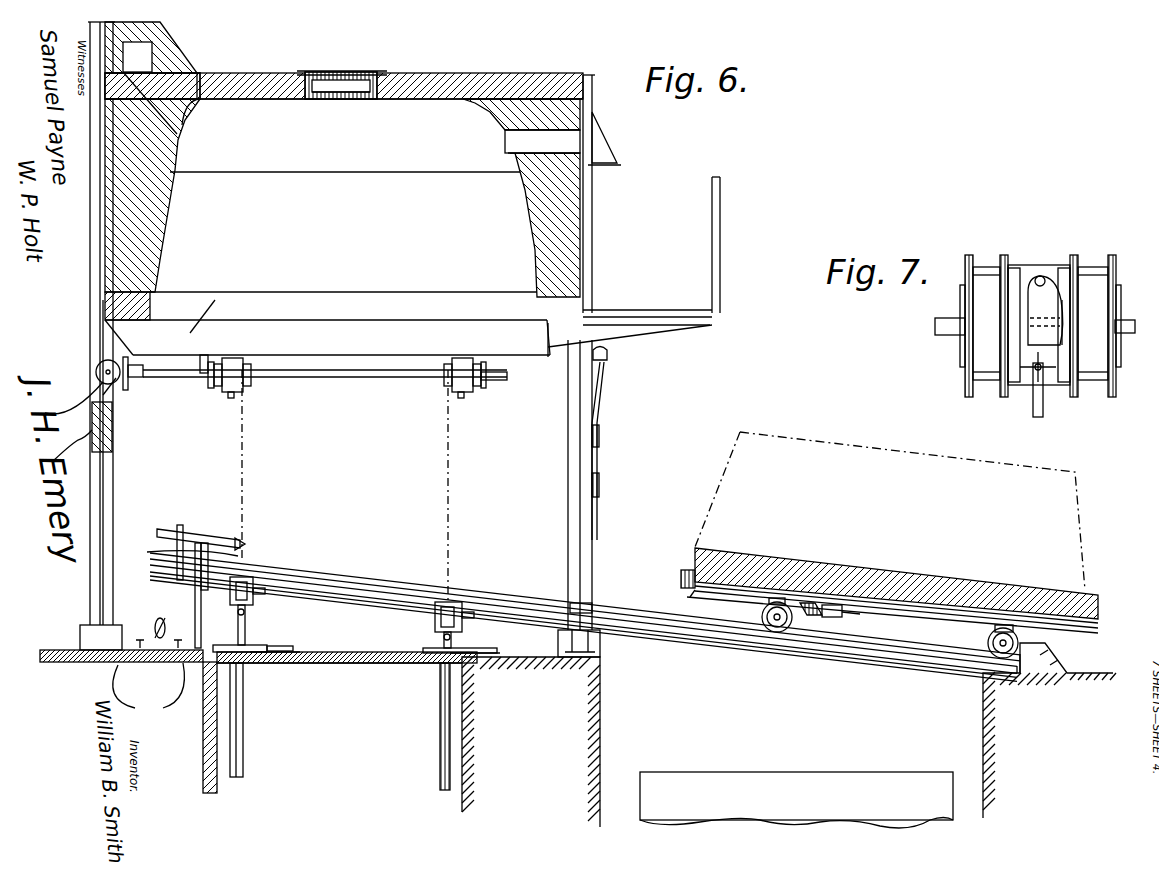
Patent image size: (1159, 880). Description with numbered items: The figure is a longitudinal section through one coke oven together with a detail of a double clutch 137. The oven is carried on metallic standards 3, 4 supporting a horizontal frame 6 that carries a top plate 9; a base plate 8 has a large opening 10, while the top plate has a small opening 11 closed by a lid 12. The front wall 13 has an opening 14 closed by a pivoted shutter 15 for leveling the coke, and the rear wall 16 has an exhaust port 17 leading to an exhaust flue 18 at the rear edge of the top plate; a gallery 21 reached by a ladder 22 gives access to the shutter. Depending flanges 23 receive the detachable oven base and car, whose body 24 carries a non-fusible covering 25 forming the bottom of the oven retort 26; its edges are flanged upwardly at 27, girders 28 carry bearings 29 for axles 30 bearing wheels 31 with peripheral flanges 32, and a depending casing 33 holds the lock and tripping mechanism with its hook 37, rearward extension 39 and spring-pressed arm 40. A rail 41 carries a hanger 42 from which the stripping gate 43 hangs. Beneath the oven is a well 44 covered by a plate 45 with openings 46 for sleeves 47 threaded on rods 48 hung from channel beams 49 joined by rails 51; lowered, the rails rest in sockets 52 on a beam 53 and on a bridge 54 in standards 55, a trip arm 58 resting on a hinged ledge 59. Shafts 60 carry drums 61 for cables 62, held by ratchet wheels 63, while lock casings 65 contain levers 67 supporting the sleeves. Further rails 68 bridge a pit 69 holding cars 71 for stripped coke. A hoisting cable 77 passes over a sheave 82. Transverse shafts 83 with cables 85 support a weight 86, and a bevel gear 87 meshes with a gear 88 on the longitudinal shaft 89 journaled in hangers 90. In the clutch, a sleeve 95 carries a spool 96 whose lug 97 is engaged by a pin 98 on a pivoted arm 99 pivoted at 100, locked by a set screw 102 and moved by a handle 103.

In FIG. 6, the standard 3 is at (585, 530).
In FIG. 6, the standard 4 is at (115, 435).
In FIG. 6, the horizontal rectangular metallic frame 6 is at (586, 77).
In FIG. 6, the base plate 8 is at (150, 297).
In FIG. 6, the top plate 9 is at (420, 73).
In FIG. 6, the large opening 10 is at (352, 293).
In FIG. 6, the small opening 11 is at (356, 94).
In FIG. 6, the lid 12 is at (352, 70).
In FIG. 6, the front wall 13 is at (513, 203).
In FIG. 6, the opening 14 is at (502, 141).
In FIG. 6, the pivoted shutter 15 is at (605, 142).
In FIG. 6, the rear wall 16 is at (160, 220).
In FIG. 6, the exhaust port 17 is at (172, 124).
In FIG. 6, the exhaust flue 18 is at (147, 67).
In FIG. 6, the gallery 21 is at (634, 267).
In FIG. 6, the steps or ladder 22 is at (1058, 665).
In FIG. 6, the depending flanges 23 is at (218, 298).
In FIG. 6, the body 24 is at (896, 611).
In FIG. 6, the covering 25 is at (930, 575).
In FIG. 6, the oven retort 26 is at (344, 161).
In FIG. 6, the upwardly flanged edges 27 is at (683, 575).
In FIG. 6, the girders 28 is at (892, 619).
In FIG. 6, the bearings 29 is at (1000, 627).
In FIG. 6, the revoluble axles 30 is at (772, 622).
In FIG. 6, the wheels 31 is at (778, 632).
In FIG. 6, the central peripheral flanges 32 is at (1065, 585).
In FIG. 6, the depending casing 33 is at (858, 623).
In FIG. 6, the hook 37 is at (790, 640).
In FIG. 6, the rearward extension 39 is at (815, 603).
In FIG. 6, the spring-pressed pivoted arm 40 is at (835, 605).
In FIG. 6, the rail 41 is at (606, 377).
In FIG. 6, the movable hanger 42 is at (609, 355).
In FIG. 6, the gate 43 is at (600, 446).
In FIG. 6, the well 44 is at (278, 727).
In FIG. 6, the plate 45 is at (350, 652).
In FIG. 6, the openings 46 is at (258, 665).
In FIG. 6, the sleeves 47 is at (243, 705).
In FIG. 6, the depending rods 48 is at (248, 630).
In FIG. 6, the transverse channel beams 49 is at (435, 620).
In FIG. 6, the longitudinal rails 51 is at (350, 576).
In FIG. 6, the sockets 52 is at (575, 603).
In FIG. 6, the transverse beam 53 is at (570, 657).
In FIG. 6, the bridge 54 is at (215, 570).
In FIG. 6, the standards 55 is at (170, 680).
In FIG. 6, the trip arm 58 is at (180, 525).
In FIG. 6, the ledge 59 is at (210, 566).
In FIG. 6, the shafts 60 is at (266, 594).
In FIG. 6, the drums 61 is at (230, 590).
In FIG. 6, the cables 62 is at (243, 512).
In FIG. 6, the ratchet wheels 63 is at (285, 600).
In FIG. 6, the lock casings 65 is at (268, 645).
In FIG. 6, the pivoted levers 67 is at (283, 647).
In FIG. 6, the rails 68 is at (840, 655).
In FIG. 6, the pit 69 is at (796, 773).
In FIG. 6, the cars 71 is at (780, 800).
In FIG. 6, the hoisting cable 77 is at (690, 599).
In FIG. 6, the sheave 82 is at (158, 615).
In FIG. 6, the shafts 83 is at (103, 382).
In FIG. 6, the cables 85 is at (60, 402).
In FIG. 6, the oblong weight 86 is at (66, 452).
In FIG. 6, the beveled gear wheel 87 is at (96, 368).
In FIG. 6, the gear wheel 88 is at (128, 383).
In FIG. 6, the longitudinal shaft 89 is at (353, 379).
In FIG. 7, the longitudinal shaft 89 is at (935, 326).
In FIG. 6, the hangers 90 is at (205, 384).
In FIG. 7, the sleeve 95 is at (962, 296).
In FIG. 6, the revoluble spool 96 is at (235, 358).
In FIG. 7, the revoluble spool 96 is at (1092, 298).
In FIG. 7, the lug 97 is at (1012, 332).
In FIG. 7, the pin 98 is at (1076, 340).
In FIG. 7, the pivoted arm 99 is at (1038, 290).
In FIG. 7, the pivot 100 is at (1041, 275).
In FIG. 7, the set screw 102 is at (1030, 370).
In FIG. 7, the depending handle 103 is at (1037, 420).
In FIG. 6, the double clutch 137 is at (240, 388).